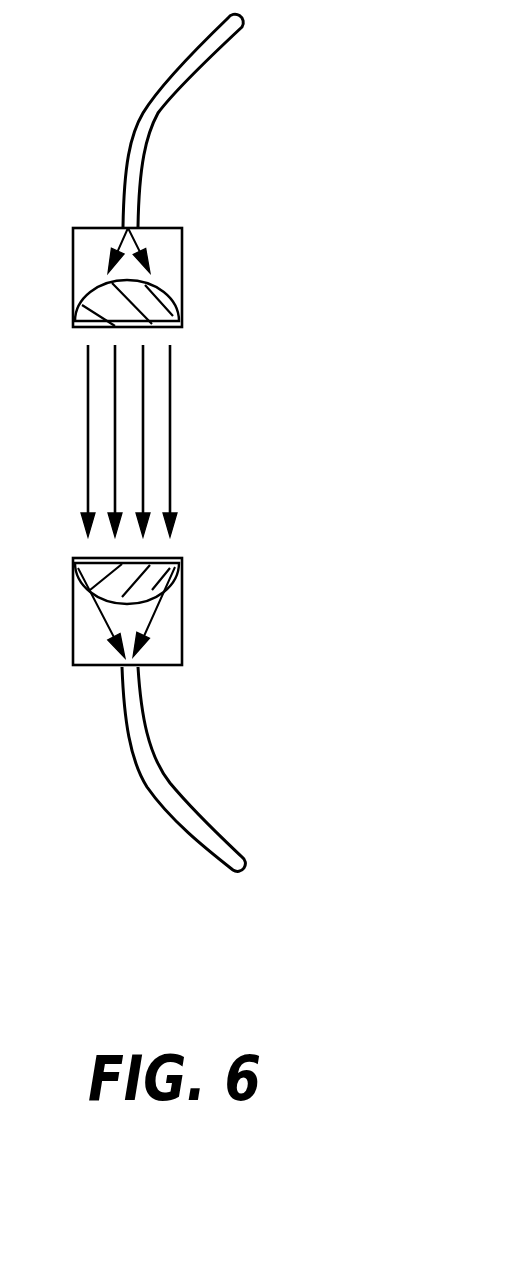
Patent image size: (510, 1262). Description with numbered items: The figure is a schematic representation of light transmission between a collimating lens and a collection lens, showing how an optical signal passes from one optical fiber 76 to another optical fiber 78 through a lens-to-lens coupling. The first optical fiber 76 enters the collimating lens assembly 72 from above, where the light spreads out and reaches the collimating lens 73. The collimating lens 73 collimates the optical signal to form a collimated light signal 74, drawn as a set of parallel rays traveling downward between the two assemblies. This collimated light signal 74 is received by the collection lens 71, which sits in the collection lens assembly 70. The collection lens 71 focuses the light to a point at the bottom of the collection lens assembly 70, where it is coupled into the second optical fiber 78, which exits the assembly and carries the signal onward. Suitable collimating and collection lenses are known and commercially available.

The collection lens assembly 70 is at (210, 625).
The collection lens 71 is at (162, 572).
The collimating lens assembly 72 is at (205, 260).
The collimating lens 73 is at (145, 308).
The collimated light signal 74 is at (195, 443).
The optical fiber 76 is at (157, 107).
The optical fiber 78 is at (157, 785).